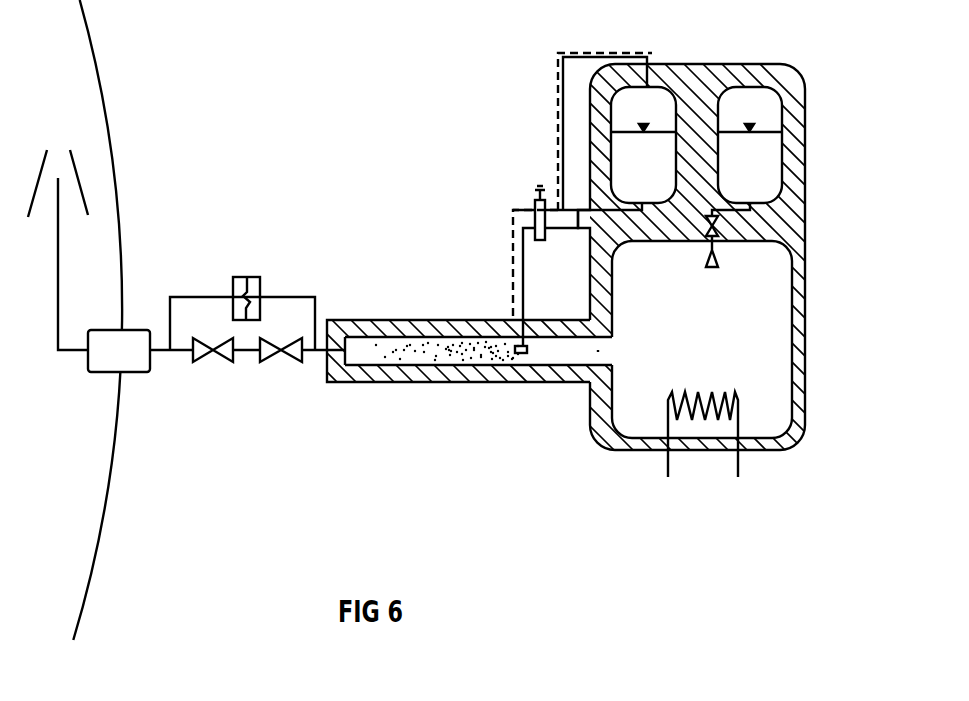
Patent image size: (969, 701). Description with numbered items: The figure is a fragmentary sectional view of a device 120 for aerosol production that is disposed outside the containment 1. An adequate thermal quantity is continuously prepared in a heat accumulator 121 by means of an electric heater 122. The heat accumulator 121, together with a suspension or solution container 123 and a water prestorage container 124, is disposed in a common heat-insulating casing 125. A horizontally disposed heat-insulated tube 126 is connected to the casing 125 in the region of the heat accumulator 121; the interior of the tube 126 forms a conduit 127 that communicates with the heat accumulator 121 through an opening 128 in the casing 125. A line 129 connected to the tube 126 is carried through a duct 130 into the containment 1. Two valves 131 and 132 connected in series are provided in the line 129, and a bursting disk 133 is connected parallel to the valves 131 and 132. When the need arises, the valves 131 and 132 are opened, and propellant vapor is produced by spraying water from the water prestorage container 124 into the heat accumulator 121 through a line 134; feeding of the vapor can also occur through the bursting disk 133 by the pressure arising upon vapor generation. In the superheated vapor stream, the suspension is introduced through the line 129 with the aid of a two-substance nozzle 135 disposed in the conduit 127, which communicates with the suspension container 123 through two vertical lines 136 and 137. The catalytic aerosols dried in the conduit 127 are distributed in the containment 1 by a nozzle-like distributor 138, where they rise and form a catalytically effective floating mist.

The containment 1 is at (104, 82).
The device for aerosol production 120 is at (428, 205).
The heat accumulator 121 is at (775, 321).
The electric heater 122 is at (697, 424).
The suspension or solution container 123 is at (658, 97).
The water prestorage container 124 is at (768, 160).
The heat-insulating casing 125 is at (798, 393).
The heat-insulated tube 126 is at (405, 383).
The conduit 127 is at (435, 345).
The opening 128 is at (598, 352).
The line 129 is at (158, 355).
The duct 130 is at (98, 374).
The valve 131 is at (200, 358).
The valve 132 is at (270, 358).
The bursting disk 133 is at (240, 277).
The line 134 is at (758, 222).
The two-substance nozzle 135 is at (518, 366).
The vertical line 136 is at (558, 100).
The vertical line 137 is at (526, 284).
The nozzle-like distributor 138 is at (85, 186).